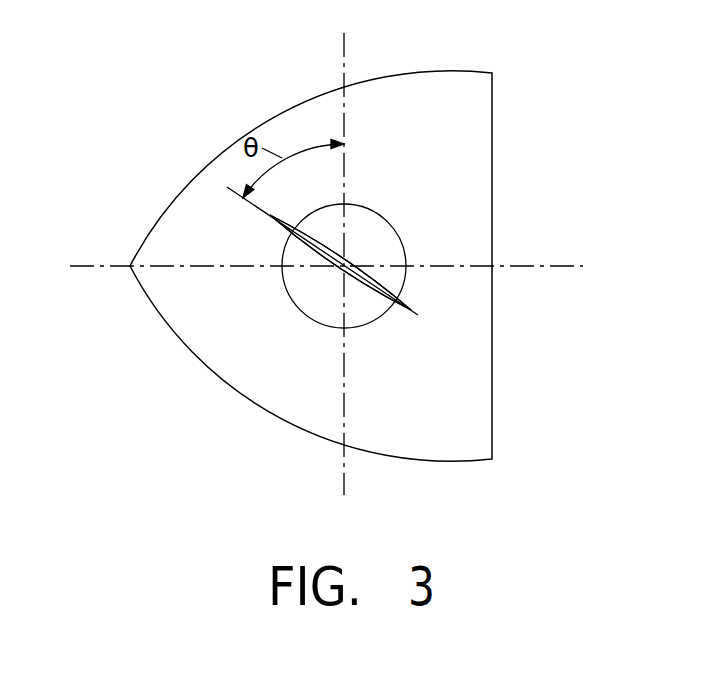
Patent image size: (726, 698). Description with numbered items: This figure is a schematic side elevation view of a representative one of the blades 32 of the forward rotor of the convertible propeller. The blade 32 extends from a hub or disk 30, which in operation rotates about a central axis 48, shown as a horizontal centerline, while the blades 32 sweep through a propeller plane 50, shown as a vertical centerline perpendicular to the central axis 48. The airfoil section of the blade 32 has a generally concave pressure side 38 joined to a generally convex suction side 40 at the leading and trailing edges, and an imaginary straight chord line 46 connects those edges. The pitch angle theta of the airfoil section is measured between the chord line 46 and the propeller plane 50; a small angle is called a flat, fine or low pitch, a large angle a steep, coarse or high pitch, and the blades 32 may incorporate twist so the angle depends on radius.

The hub 30 is at (472, 86).
The blade 32 is at (372, 328).
The pressure side 38 is at (326, 233).
The suction side 40 is at (332, 282).
The chord line 46 is at (292, 241).
The central axis 48 is at (561, 266).
The propeller plane 50 is at (344, 52).